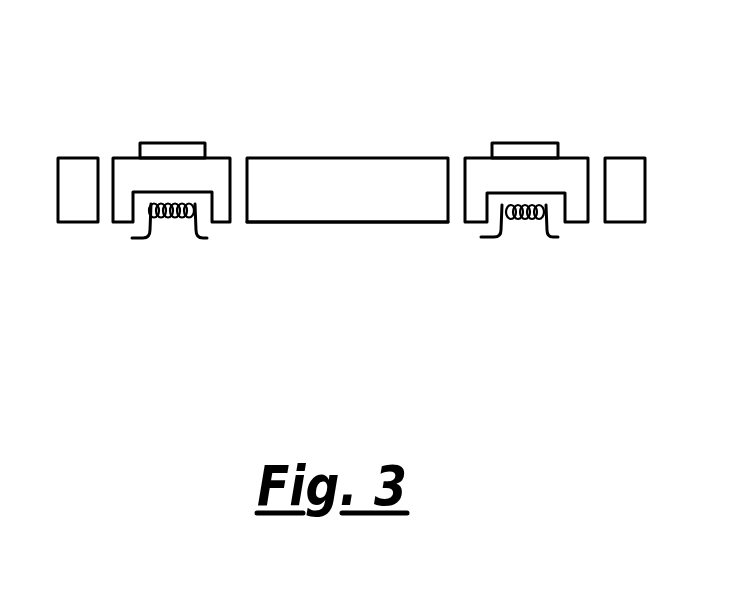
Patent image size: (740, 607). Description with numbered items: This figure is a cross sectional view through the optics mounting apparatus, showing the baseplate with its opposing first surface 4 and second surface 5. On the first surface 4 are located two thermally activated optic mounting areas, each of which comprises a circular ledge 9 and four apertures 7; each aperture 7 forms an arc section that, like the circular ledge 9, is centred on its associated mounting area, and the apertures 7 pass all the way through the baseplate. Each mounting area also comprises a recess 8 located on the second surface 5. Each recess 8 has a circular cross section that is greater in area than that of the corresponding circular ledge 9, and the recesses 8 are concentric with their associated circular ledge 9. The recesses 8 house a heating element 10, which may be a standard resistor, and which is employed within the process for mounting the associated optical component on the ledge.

The first surface 4 is at (298, 158).
The second surface 5 is at (338, 222).
The aperture 7 is at (105, 168).
The recess 8 is at (203, 205).
The circular ledge 9 is at (175, 142).
The heating element 10 is at (163, 218).